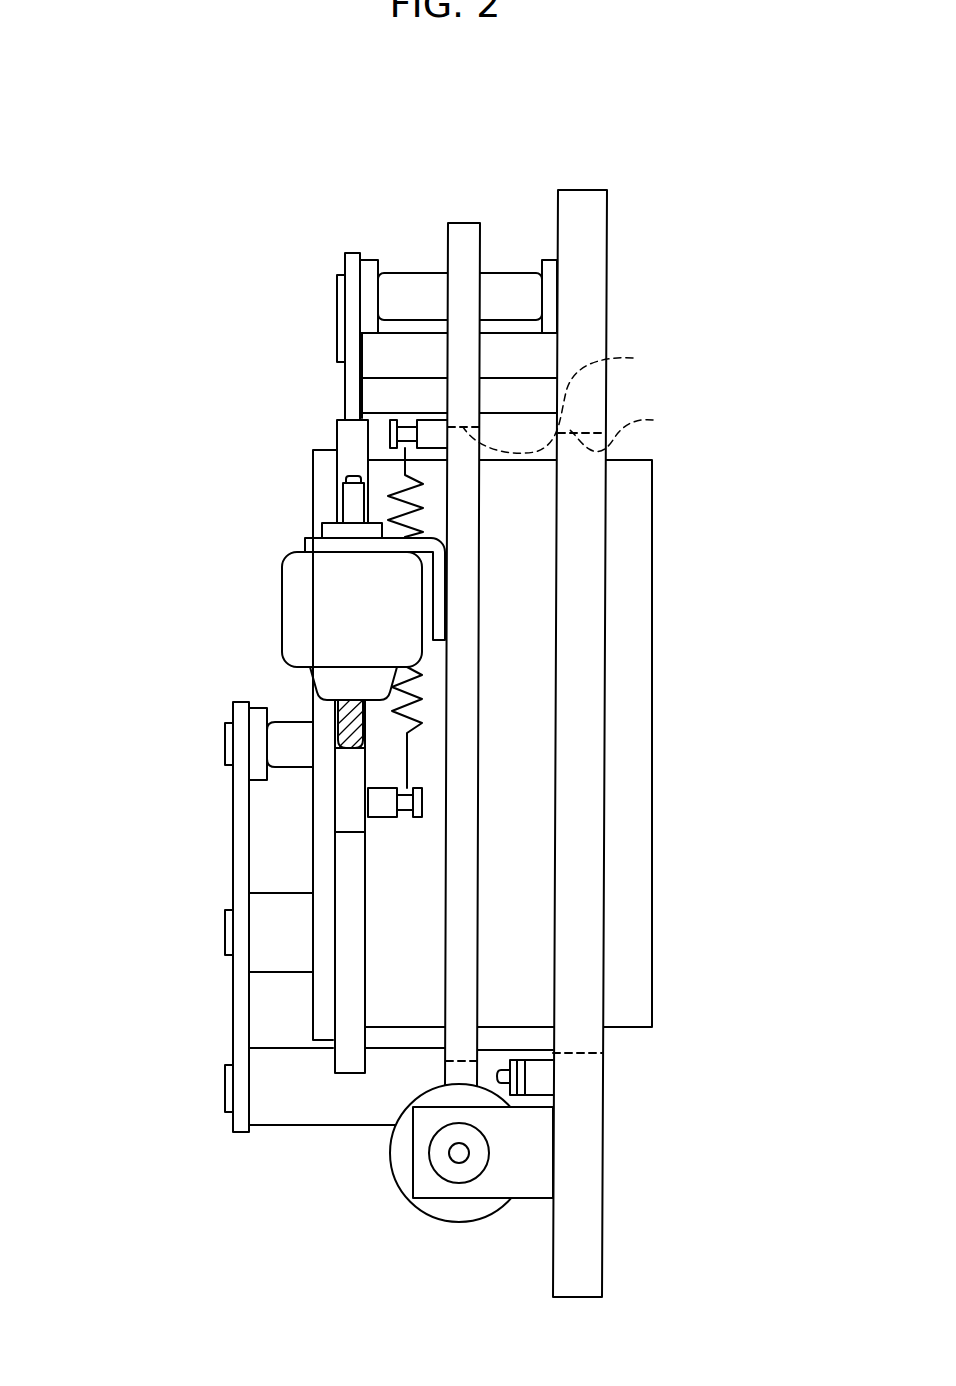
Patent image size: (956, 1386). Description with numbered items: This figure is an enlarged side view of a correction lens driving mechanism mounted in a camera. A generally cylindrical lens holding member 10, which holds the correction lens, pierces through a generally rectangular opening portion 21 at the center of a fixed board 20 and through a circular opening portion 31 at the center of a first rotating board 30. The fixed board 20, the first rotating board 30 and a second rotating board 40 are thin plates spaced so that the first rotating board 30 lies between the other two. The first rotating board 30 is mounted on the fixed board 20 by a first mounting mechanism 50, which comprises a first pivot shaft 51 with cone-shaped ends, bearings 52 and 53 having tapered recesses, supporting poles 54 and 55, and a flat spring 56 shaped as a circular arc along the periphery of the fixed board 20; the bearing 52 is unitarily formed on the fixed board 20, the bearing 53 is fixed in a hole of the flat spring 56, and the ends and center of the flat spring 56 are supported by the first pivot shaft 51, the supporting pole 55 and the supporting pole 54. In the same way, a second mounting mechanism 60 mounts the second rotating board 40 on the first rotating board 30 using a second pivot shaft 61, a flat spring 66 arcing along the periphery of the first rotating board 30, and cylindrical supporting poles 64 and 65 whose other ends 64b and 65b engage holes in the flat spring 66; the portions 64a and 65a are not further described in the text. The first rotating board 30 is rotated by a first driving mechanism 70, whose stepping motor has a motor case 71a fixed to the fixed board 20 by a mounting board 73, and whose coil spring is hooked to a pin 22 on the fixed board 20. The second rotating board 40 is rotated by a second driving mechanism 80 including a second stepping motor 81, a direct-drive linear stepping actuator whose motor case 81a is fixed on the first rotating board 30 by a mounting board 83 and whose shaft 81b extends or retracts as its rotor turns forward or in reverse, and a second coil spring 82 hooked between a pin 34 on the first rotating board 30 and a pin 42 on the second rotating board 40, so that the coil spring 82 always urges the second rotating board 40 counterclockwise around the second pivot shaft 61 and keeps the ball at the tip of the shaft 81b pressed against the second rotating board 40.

The lens holding member 10 is at (653, 935).
The fixed board 20 is at (607, 223).
The opening portion 21 is at (624, 429).
The pin 22 is at (540, 1077).
The first rotating board 30 is at (465, 222).
The opening portion 31 is at (559, 398).
The pin 34 is at (432, 433).
The second rotating board 40 is at (337, 433).
The pin 42 is at (382, 802).
The first mounting mechanism 50 is at (486, 341).
The first pivot shaft 51 is at (508, 272).
The bearing 52 is at (552, 258).
The bearing 53 is at (373, 258).
The supporting pole 54 is at (528, 355).
The supporting pole 55 is at (540, 450).
The flat spring 56 is at (345, 258).
The second mounting mechanism 60 is at (312, 934).
The second pivot shaft 61 is at (293, 745).
The supporting pole 64 is at (278, 890).
The mounting block lower surface 64a is at (283, 972).
The other end of supporting pole 64b is at (225, 935).
The supporting pole 65 is at (399, 1142).
The bracket bottom plate 65a is at (323, 1125).
The other end of supporting pole 65b is at (225, 1090).
The flat spring 66 is at (232, 802).
The first driving mechanism 70 is at (528, 1207).
The motor case 71a is at (467, 1222).
The mounting board 73 is at (520, 1153).
The second driving mechanism 80 is at (446, 641).
The second stepping motor 81 is at (298, 632).
The motor case 81a is at (282, 615).
The shaft 81b is at (313, 718).
The second coil spring 82 is at (417, 715).
The mounting board 83 is at (440, 597).